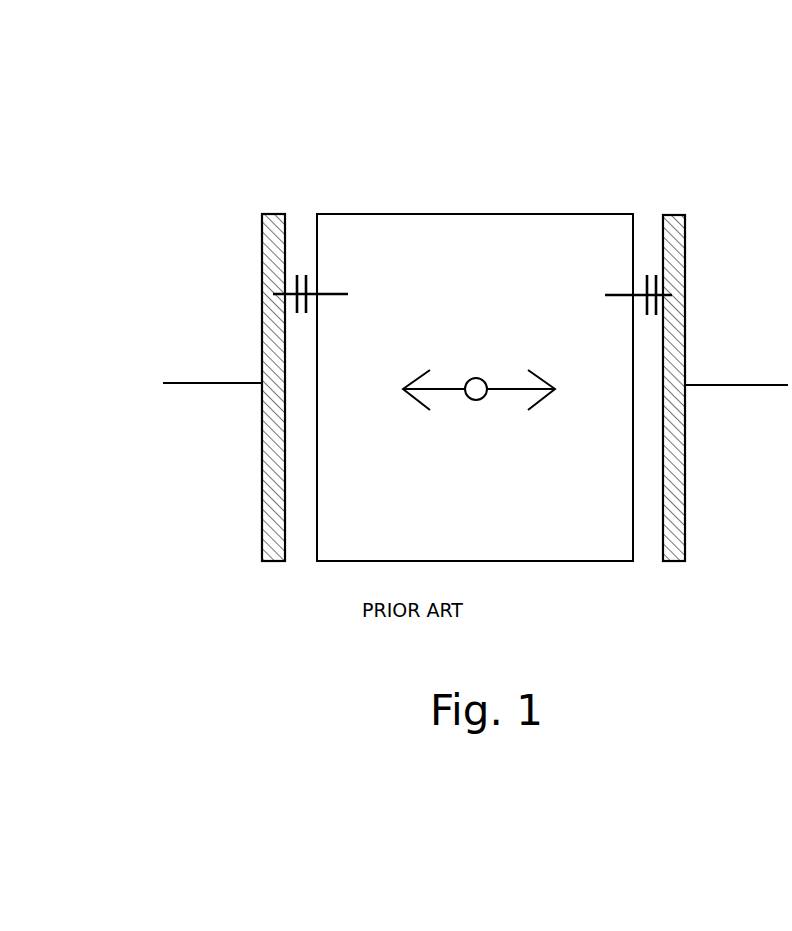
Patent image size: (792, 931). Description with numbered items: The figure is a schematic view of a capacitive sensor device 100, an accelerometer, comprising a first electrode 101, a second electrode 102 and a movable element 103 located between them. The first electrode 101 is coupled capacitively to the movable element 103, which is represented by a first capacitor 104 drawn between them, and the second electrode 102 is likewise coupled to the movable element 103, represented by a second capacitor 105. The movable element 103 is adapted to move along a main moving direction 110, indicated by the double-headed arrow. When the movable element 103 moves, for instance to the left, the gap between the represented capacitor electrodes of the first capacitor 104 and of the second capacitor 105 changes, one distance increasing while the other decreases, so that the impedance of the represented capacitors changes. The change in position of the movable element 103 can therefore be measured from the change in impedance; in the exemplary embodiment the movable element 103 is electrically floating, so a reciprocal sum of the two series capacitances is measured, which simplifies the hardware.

The capacitive sensor device 100 is at (493, 138).
The first electrode 101 is at (262, 442).
The second electrode 102 is at (685, 463).
The movable element 103 is at (583, 545).
The first capacitor 104 is at (301, 215).
The second capacitor 105 is at (647, 217).
The main moving direction 110 is at (503, 388).